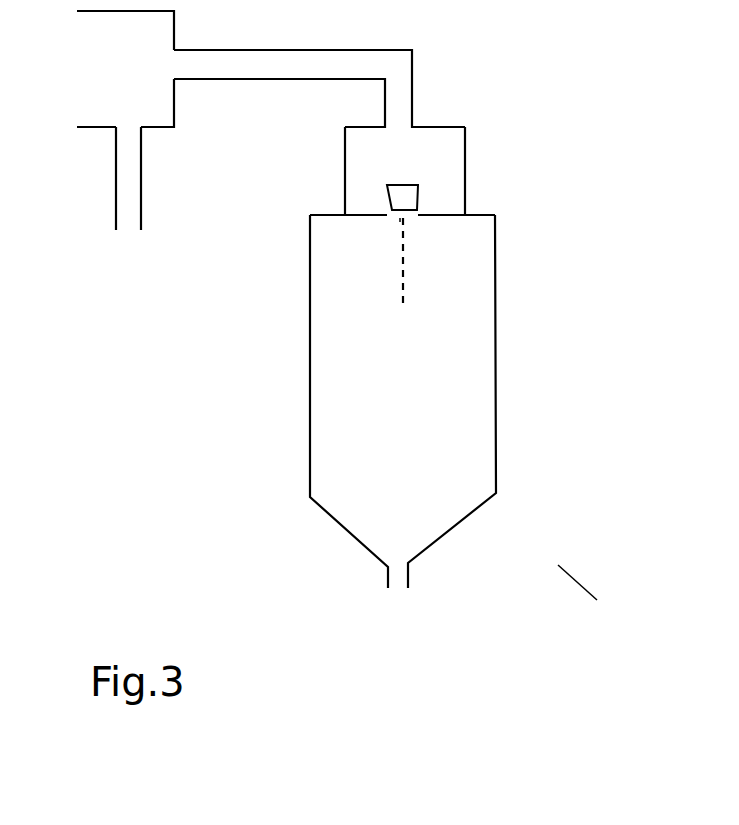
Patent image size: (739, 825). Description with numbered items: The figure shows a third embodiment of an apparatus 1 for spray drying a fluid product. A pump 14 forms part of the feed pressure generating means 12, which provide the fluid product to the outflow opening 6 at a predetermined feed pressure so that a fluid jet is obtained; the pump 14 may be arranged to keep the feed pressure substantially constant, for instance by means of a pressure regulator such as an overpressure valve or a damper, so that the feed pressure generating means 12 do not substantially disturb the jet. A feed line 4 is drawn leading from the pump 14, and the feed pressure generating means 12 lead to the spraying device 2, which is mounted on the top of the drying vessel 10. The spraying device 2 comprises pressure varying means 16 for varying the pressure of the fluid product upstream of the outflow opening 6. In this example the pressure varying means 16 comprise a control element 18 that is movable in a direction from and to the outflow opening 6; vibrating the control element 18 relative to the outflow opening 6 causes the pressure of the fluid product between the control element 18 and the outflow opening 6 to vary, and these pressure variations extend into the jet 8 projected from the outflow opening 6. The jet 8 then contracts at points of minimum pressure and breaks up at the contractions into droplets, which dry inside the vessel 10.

The apparatus 1 is at (558, 565).
The spraying device 2 is at (465, 198).
The feed pipe 4 is at (116, 185).
The outflow opening 6 is at (388, 226).
The axis / jet 8 is at (420, 250).
The vessel 10 is at (497, 430).
The feed pressure generating means 12 is at (174, 32).
The pump 14 is at (77, 107).
The pressure varying means 16 is at (418, 192).
The control element 18 is at (385, 195).